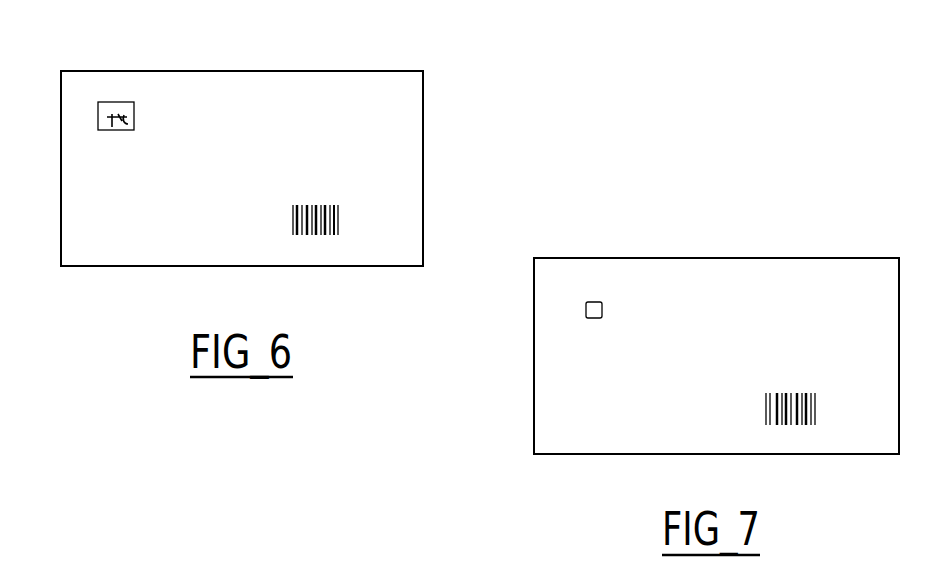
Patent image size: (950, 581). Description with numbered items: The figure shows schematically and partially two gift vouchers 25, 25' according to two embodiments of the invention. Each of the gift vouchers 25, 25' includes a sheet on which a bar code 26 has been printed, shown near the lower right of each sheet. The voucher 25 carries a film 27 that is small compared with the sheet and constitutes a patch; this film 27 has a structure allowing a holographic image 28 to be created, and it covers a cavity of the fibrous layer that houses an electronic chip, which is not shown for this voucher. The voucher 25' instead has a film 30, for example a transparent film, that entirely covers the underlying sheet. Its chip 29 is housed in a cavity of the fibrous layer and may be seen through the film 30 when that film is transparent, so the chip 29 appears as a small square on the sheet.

In FIG. 6, the gift voucher 25 is at (277, 141).
In FIG. 7, the gift voucher 25' is at (716, 398).
In FIG. 6, the bar code 26 is at (322, 225).
In FIG. 7, the bar code 26 is at (806, 410).
In FIG. 6, the film 27 is at (134, 113).
In FIG. 6, the holographic image 28 is at (108, 117).
In FIG. 7, the chip 29 is at (602, 307).
In FIG. 7, the film 30 is at (568, 406).